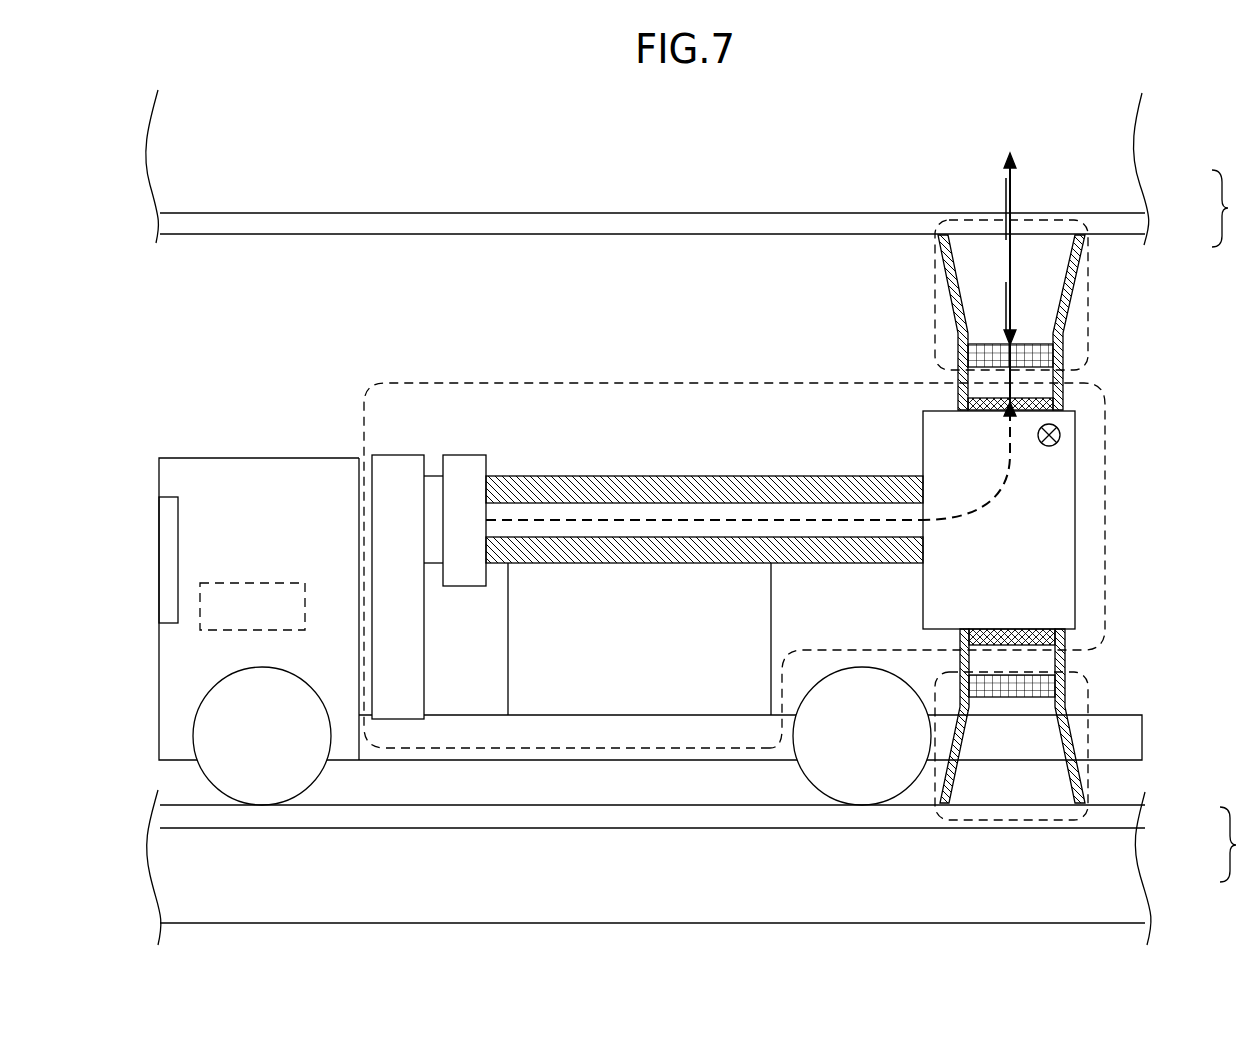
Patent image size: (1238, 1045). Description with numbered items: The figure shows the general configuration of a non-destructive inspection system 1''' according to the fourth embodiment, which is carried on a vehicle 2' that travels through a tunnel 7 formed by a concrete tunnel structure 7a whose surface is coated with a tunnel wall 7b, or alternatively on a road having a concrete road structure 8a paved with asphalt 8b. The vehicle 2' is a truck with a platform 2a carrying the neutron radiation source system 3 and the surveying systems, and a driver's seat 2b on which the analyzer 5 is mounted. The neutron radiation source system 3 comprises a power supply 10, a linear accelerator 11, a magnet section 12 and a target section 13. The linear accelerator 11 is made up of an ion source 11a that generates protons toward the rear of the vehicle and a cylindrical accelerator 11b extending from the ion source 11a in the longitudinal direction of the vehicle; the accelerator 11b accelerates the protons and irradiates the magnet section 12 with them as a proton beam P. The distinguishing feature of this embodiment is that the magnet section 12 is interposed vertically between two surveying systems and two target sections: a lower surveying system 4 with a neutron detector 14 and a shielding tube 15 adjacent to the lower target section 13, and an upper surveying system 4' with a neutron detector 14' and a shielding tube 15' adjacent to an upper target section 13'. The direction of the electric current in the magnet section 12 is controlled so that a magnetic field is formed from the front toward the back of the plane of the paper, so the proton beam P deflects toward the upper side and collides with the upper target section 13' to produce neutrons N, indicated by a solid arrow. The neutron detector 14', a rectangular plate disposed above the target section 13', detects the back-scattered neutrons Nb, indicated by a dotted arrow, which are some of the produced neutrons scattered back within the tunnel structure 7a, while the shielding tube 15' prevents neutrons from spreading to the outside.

The non-destructive inspection system 1''' is at (145, 301).
The vehicle 2' is at (641, 590).
The platform 2a is at (487, 718).
The driver's seat 2b is at (318, 458).
The analyzer 5 is at (257, 583).
The neutron radiation source system 3 is at (741, 378).
The power supply 10 is at (396, 455).
The linear accelerator 11 is at (673, 551).
The ion source 11a is at (488, 458).
The accelerator 11b is at (513, 433).
The magnet section 12 is at (923, 428).
The target section 13 is at (966, 643).
The neutron detector 14 is at (1057, 675).
The shielding tube 15 is at (1058, 716).
The surveying system 4 is at (1027, 724).
The target section 13' is at (1057, 395).
The neutron detector 14' is at (1057, 353).
The shielding tube 15' is at (1045, 322).
The surveying system 4' is at (989, 281).
The tunnel 7 is at (1225, 208).
The tunnel structure 7a is at (1130, 177).
The tunnel wall 7b is at (1122, 225).
The road structure 8a is at (1123, 867).
The asphalt 8b is at (1130, 820).
The neutrons N is at (1010, 256).
The back-scattered neutrons Nb is at (1007, 187).
The proton beam P is at (1008, 463).